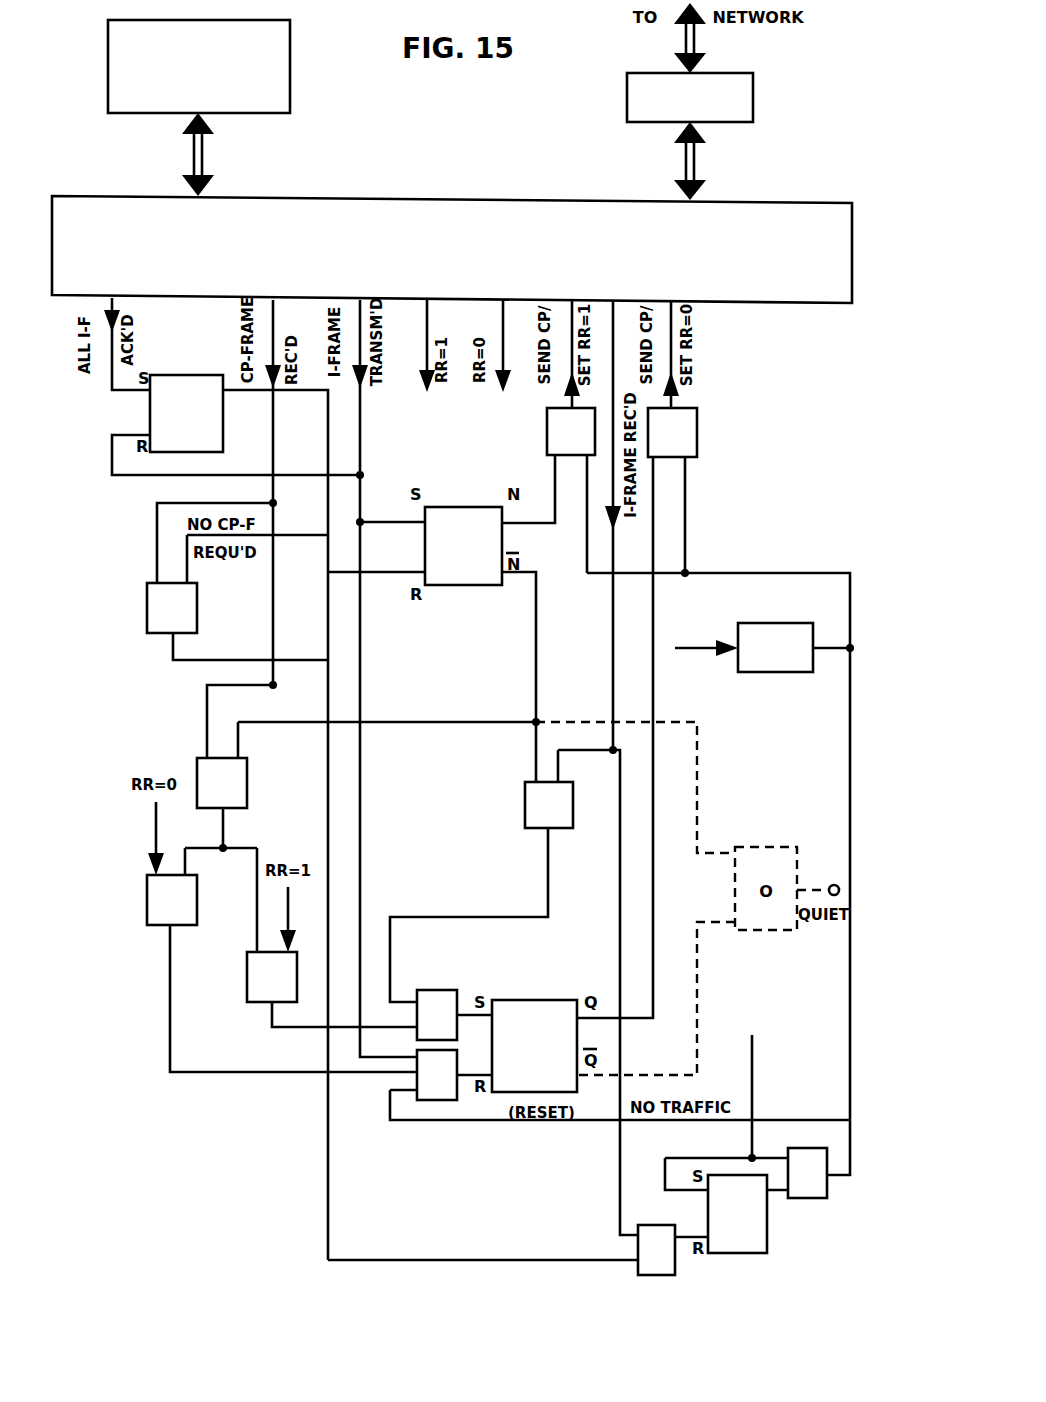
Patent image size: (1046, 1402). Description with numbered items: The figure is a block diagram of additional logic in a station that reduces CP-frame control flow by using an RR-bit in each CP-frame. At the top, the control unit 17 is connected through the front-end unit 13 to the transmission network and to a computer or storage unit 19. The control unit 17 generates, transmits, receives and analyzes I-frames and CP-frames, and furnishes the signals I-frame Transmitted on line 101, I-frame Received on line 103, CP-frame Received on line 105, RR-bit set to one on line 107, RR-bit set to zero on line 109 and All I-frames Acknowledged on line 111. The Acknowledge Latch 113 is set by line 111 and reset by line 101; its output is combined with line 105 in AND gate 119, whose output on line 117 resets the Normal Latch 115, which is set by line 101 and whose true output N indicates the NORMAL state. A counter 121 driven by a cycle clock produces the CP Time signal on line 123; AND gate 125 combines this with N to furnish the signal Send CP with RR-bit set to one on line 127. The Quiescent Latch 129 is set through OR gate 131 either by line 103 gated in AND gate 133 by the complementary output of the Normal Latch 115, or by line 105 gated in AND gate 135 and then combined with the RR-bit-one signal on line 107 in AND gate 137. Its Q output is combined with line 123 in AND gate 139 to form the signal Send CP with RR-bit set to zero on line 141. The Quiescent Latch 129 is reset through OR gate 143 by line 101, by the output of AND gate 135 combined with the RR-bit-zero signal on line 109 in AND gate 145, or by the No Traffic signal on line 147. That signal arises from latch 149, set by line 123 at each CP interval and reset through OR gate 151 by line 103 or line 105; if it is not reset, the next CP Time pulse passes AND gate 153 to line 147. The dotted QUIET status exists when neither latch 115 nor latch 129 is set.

The computer or storage unit 19 is at (292, 68).
The front-end unit 13 is at (755, 95).
The control unit 17 is at (470, 200).
The All I-frames Acknowledged line 111 is at (112, 393).
The Acknowledge Latch 113 is at (188, 376).
The output line of AND gate 119 117 is at (324, 596).
The CP-frame Received line 105 is at (270, 596).
The AND gate 119 is at (146, 603).
The I-frame Transmitted line 101 is at (362, 436).
The RR=1 line 107 is at (425, 378).
The RR=0 line 109 is at (502, 378).
The AND gate 125 is at (547, 437).
The Send CP/Set RR=1 line 127 is at (570, 398).
The Normal Latch 115 is at (453, 587).
The I-frame Received line 103 is at (611, 604).
The AND gate 139 is at (699, 435).
The Send CP/Set RR=0 line 141 is at (676, 395).
The CP Time line 123 is at (742, 578).
The counter 121 is at (783, 674).
The AND gate 135 is at (249, 778).
The AND gate 145 is at (146, 892).
The AND gate 137 is at (246, 972).
The AND gate 133 is at (524, 809).
The OR gate 131 is at (428, 990).
The OR gate 143 is at (417, 1080).
The Quiescent Latch 129 is at (522, 1000).
The No Traffic line 147 is at (426, 1122).
The latch 149 is at (769, 1240).
The AND gate 153 is at (805, 1198).
The OR gate 151 is at (650, 1225).